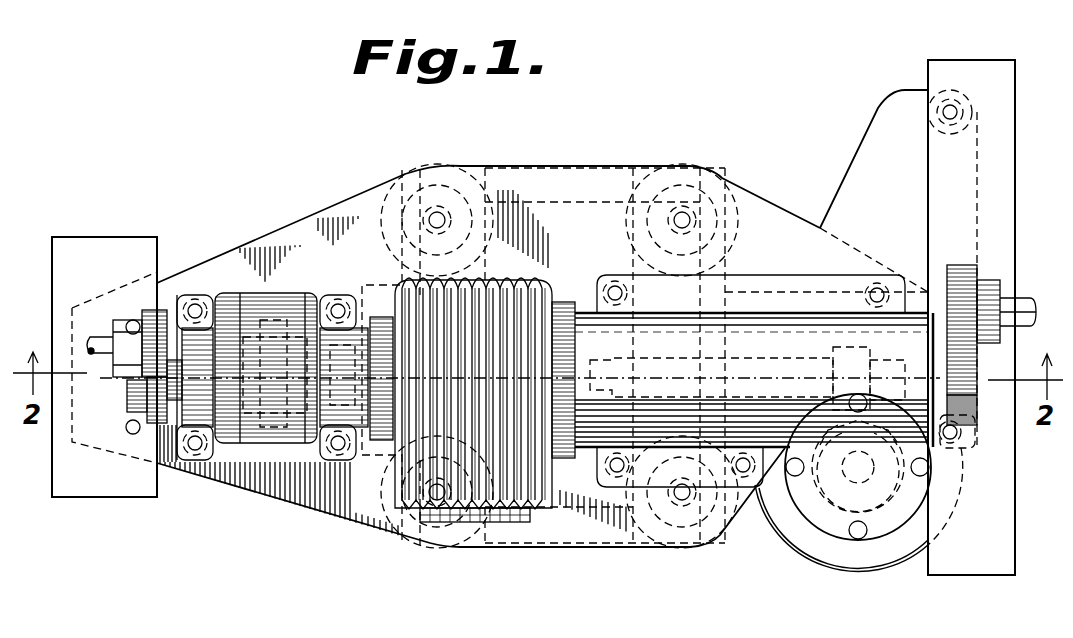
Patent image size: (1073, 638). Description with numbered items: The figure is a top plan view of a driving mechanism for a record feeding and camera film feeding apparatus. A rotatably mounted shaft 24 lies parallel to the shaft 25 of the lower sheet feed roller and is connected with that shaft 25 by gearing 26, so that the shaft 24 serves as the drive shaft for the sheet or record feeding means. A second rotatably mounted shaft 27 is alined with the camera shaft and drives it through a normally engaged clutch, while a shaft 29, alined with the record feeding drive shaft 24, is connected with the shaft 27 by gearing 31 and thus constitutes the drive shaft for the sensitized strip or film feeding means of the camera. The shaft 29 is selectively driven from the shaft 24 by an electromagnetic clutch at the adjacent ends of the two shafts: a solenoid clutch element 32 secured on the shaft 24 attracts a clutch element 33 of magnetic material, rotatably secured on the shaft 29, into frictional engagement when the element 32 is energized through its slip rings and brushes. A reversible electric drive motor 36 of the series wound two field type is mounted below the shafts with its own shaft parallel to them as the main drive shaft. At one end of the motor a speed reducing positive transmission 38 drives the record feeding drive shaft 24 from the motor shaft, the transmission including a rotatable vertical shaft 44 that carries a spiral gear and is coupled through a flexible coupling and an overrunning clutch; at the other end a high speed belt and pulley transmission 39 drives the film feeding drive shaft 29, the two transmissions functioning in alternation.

The shaft 24 is at (737, 361).
The shaft of the lower sheet feed roller 25 is at (1003, 300).
The gearing 26 is at (977, 396).
The shaft 27 is at (100, 352).
The shaft 29 is at (173, 378).
The gearing 31 is at (156, 310).
The solenoid clutch element 32 is at (513, 290).
The clutch element 33 is at (398, 284).
The reversible electric drive motor 36 is at (725, 264).
The speed reducing positive transmission 38 is at (838, 431).
The high speed belt and pulley transmission 39 is at (300, 292).
The rotatable vertical shaft 44 is at (864, 452).